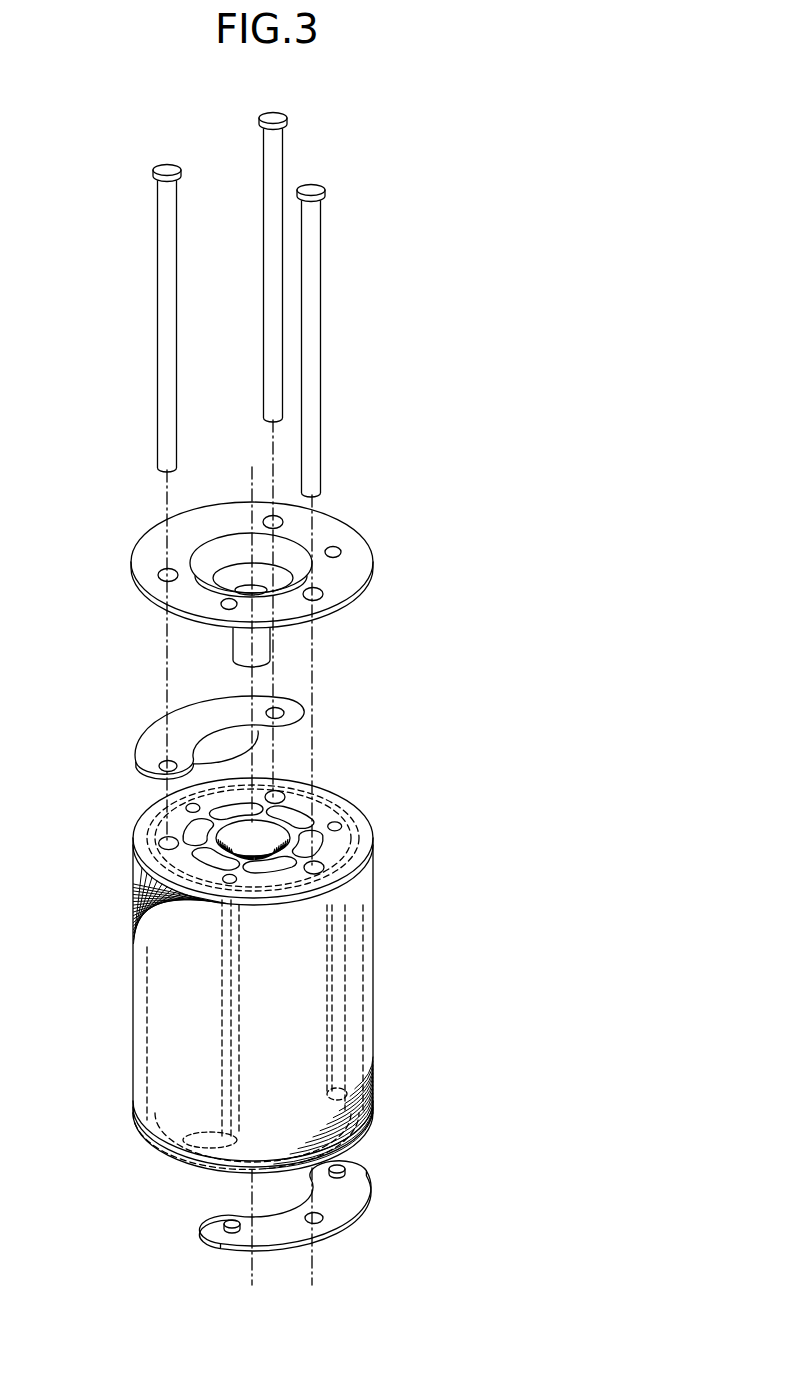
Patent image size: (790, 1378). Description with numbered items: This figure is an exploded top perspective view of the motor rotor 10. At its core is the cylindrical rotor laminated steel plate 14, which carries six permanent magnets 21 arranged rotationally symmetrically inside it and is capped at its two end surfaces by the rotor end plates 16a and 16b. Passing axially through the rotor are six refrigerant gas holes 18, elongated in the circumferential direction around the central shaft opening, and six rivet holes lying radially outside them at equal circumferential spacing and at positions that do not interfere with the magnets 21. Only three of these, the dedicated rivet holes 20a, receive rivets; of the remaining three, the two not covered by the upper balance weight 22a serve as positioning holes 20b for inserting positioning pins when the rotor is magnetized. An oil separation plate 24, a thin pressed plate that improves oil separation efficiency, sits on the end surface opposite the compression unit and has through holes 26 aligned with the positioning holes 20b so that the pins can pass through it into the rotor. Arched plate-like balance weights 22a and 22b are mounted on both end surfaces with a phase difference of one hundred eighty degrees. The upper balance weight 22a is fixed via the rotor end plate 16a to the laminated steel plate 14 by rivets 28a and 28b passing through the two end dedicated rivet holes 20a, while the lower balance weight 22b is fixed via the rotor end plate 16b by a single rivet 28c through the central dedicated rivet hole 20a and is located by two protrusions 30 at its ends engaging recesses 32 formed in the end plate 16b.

The motor rotor 10 is at (455, 191).
The rotor laminated steel plate 14 is at (256, 944).
The rotor end plate 16a is at (373, 822).
The rotor end plate 16b is at (350, 1148).
The refrigerant gas holes 18 is at (197, 827).
The dedicated rivet holes 20a is at (278, 791).
The positioning holes 20b is at (337, 822).
The magnets 21 is at (370, 1000).
The balance weight 22a is at (152, 752).
The balance weight 22b is at (317, 1234).
The oil separation plate 24 is at (270, 555).
The through holes 26 is at (341, 551).
The rivet 28a is at (158, 297).
The rivet 28b is at (264, 254).
The rivet 28c is at (320, 283).
The protrusions 30 is at (347, 1171).
The recesses 32 is at (330, 1098).